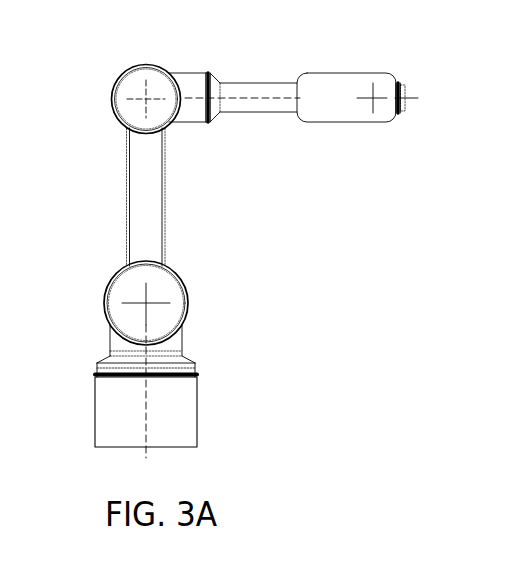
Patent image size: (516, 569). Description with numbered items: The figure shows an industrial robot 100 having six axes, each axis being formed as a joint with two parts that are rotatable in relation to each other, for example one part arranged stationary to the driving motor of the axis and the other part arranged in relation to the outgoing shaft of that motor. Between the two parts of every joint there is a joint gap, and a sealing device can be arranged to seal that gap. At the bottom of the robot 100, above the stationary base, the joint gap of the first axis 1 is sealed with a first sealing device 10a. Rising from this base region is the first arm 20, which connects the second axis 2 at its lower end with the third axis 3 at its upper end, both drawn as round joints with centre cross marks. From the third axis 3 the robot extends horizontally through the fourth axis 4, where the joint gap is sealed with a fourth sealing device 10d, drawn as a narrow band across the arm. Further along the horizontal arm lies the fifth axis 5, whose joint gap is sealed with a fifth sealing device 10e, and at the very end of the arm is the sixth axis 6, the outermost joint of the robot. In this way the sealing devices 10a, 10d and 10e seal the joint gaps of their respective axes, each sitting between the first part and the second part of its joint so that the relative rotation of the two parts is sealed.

The first axis 1 is at (145, 417).
The second axis 2 is at (146, 303).
The third axis 3 is at (146, 99).
The fourth axis 4 is at (236, 98).
The fifth axis 5 is at (357, 98).
The sixth axis 6 is at (404, 97).
The first sealing device 10a is at (180, 373).
The fourth sealing device 10d is at (207, 73).
The fifth sealing device 10e is at (397, 87).
The first arm 20 is at (153, 218).
The industrial robot 100 is at (155, 250).